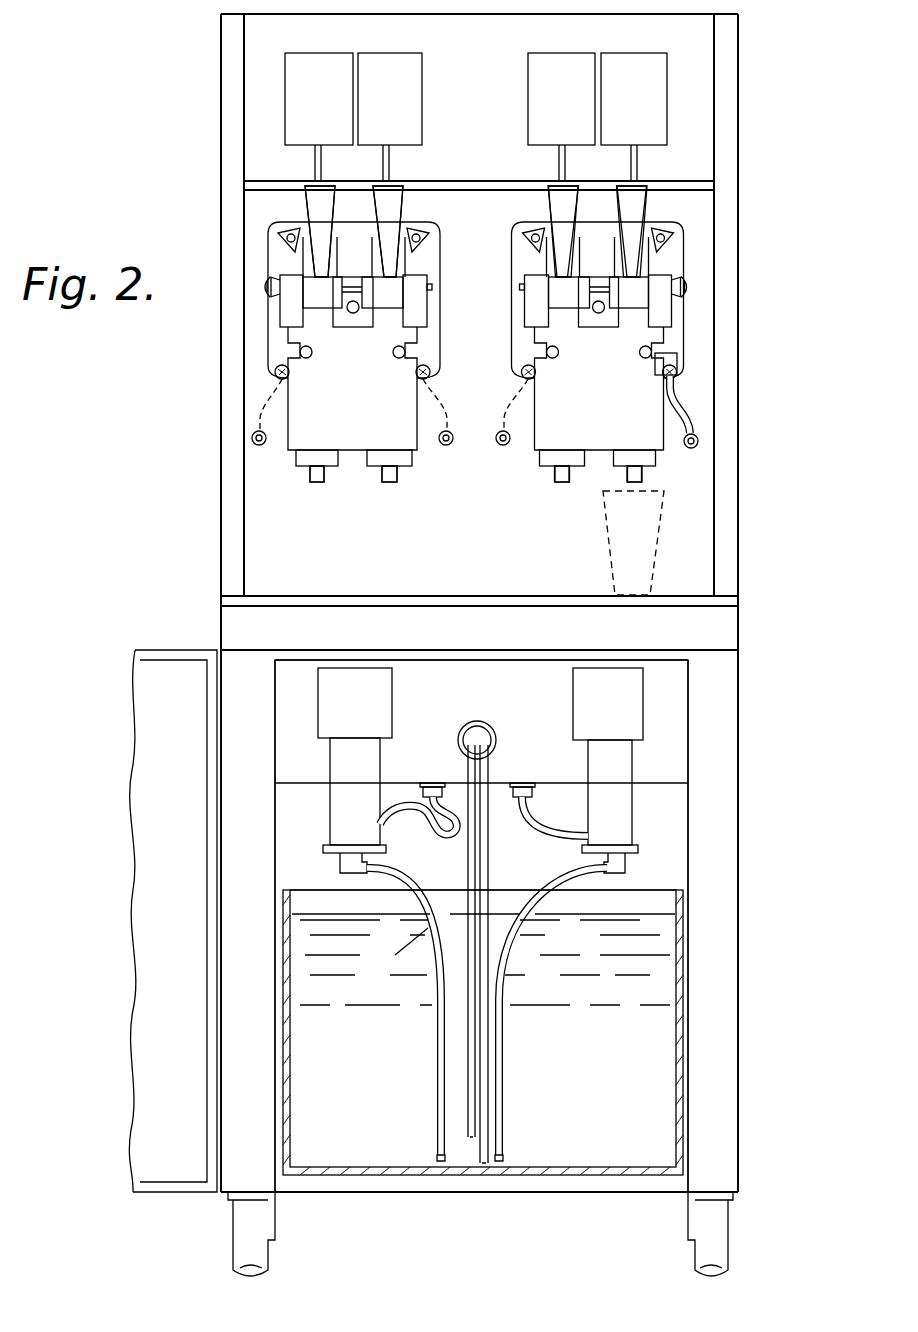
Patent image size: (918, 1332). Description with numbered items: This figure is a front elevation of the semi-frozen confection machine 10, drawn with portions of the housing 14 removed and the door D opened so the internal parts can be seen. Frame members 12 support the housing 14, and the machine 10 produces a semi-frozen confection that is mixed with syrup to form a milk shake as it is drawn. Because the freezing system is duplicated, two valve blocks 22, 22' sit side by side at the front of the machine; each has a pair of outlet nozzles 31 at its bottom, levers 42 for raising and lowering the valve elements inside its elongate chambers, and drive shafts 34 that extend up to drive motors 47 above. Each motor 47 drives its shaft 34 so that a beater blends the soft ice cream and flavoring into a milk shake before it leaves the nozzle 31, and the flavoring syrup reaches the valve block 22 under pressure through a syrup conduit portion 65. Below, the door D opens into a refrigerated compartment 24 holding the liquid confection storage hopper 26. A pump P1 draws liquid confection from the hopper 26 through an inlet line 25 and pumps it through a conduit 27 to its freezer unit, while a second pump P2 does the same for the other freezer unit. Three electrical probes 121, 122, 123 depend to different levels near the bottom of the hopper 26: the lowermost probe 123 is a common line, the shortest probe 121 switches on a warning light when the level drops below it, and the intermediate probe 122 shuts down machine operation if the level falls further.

The semi-frozen confection machine 10 is at (210, 468).
The frame members 12 is at (273, 1222).
The housing 14 is at (733, 550).
The valve block 22 is at (674, 334).
The valve block 22' is at (296, 334).
The refrigerated compartment 24 is at (676, 841).
The inlet line 25 is at (440, 1025).
The liquid confection storage hopper 26 is at (683, 946).
The conduit 27 is at (400, 832).
The outlet nozzles 31 is at (313, 478).
The drive shaft 34 is at (390, 155).
The lever 42 is at (400, 206).
The drive motor 47 is at (330, 104).
The syrup conduit portion 65 is at (262, 400).
The electrical probe 121 is at (463, 770).
The electrical probe 122 is at (478, 725).
The electrical probe 123 is at (492, 768).
The door D is at (160, 922).
The pump P1 is at (625, 782).
The pump P2 is at (365, 782).